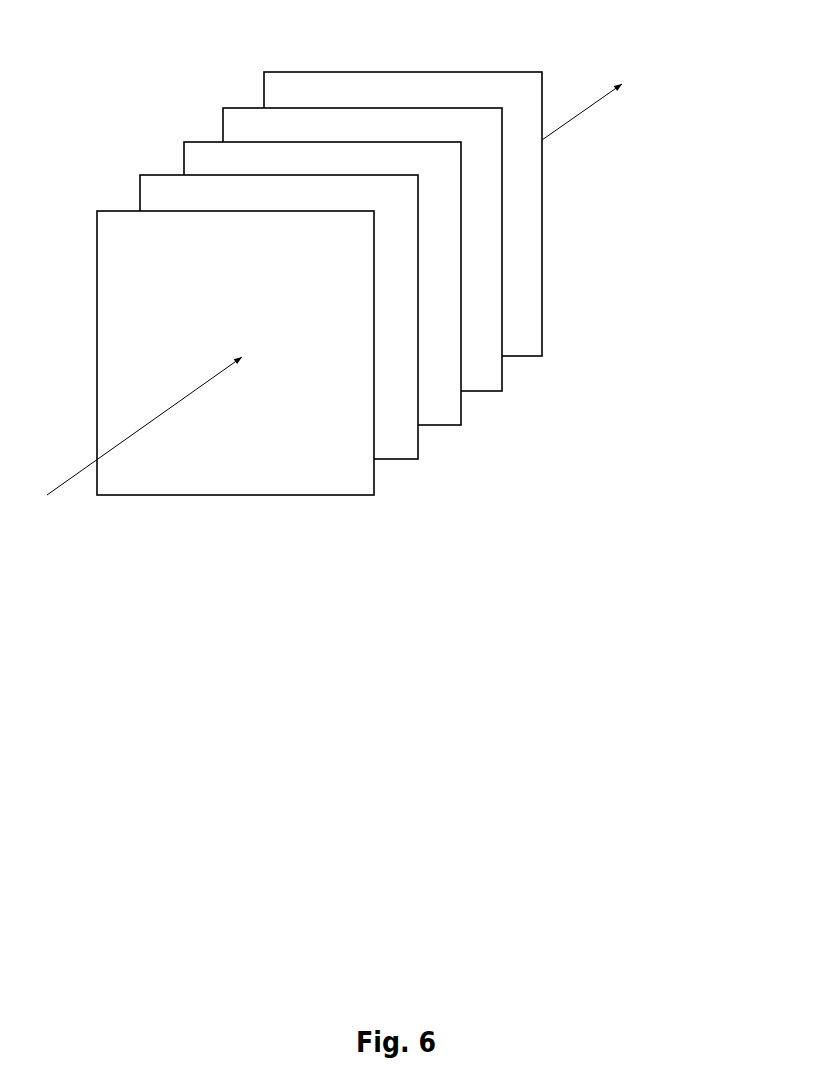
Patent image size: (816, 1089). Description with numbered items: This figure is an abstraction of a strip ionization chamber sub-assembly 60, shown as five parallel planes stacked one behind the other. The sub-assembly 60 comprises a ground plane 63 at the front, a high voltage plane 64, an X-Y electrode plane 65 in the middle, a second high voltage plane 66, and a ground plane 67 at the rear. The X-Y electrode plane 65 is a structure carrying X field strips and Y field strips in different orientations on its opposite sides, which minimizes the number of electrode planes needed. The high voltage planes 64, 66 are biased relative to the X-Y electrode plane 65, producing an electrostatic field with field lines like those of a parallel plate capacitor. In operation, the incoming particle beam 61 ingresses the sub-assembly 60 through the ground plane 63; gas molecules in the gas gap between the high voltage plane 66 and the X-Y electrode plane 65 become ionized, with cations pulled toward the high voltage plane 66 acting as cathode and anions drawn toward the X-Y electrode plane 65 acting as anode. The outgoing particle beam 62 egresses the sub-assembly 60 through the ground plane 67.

The strip ionization chamber sub-assembly 60 is at (200, 548).
The particle beam 61 is at (69, 542).
The particle beam 62 is at (590, 136).
The ground plane 63 is at (347, 471).
The high voltage plane 64 is at (391, 435).
The X-Y electrode plane 65 is at (434, 401).
The high voltage plane 66 is at (475, 367).
The ground plane 67 is at (515, 332).